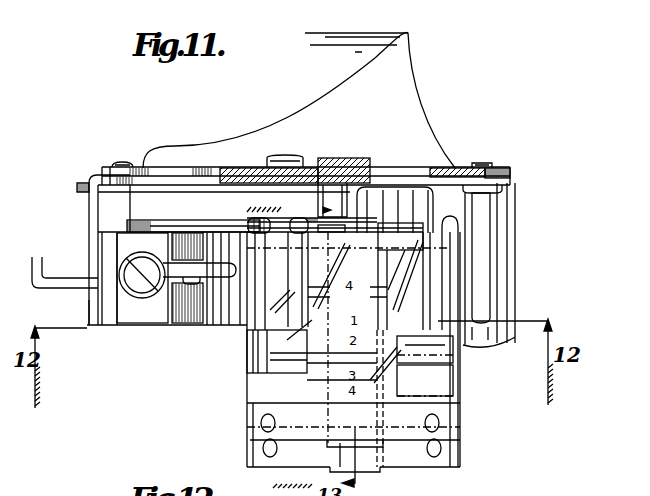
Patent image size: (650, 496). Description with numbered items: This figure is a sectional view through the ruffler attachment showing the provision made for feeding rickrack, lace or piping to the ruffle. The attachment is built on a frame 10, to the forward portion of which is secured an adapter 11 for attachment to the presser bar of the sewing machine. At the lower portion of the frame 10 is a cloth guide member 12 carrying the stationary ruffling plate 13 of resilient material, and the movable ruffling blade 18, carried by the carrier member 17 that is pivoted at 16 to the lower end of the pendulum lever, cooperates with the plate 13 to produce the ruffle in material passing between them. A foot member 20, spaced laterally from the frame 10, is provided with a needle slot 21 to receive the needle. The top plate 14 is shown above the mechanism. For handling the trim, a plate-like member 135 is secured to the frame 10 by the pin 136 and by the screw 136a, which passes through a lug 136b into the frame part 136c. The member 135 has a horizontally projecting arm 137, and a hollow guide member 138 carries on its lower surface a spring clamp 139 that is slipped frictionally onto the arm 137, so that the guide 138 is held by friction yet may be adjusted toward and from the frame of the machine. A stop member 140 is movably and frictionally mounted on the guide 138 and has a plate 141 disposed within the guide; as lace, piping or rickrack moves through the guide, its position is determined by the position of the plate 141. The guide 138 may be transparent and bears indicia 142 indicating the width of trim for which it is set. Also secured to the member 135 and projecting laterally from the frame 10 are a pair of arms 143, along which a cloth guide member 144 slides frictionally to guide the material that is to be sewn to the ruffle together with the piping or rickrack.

The frame 10 is at (237, 176).
The adapter 11 is at (52, 283).
The cloth guide member 12 is at (503, 218).
The stationary ruffling plate 13 is at (281, 203).
The top plate 14 is at (458, 167).
The pivot 16 is at (482, 163).
The carrier member 17 is at (403, 185).
The movable ruffling blade 18 is at (227, 306).
The foot member 20 is at (100, 315).
The needle slot 21 is at (182, 298).
The plate-like member 135 is at (358, 222).
The pin 136 is at (333, 183).
The screw 136a is at (143, 290).
The lug 136b is at (160, 231).
The frame part 136c is at (127, 207).
The horizontally projecting arm 137 is at (382, 257).
The hollow guide member 138 is at (438, 381).
The spring clamp 139 is at (373, 445).
The stop member 140 is at (445, 355).
The plate 141 is at (320, 380).
The indicia 142 is at (342, 382).
The arms 143 is at (298, 307).
The cloth guide member 144 is at (248, 232).